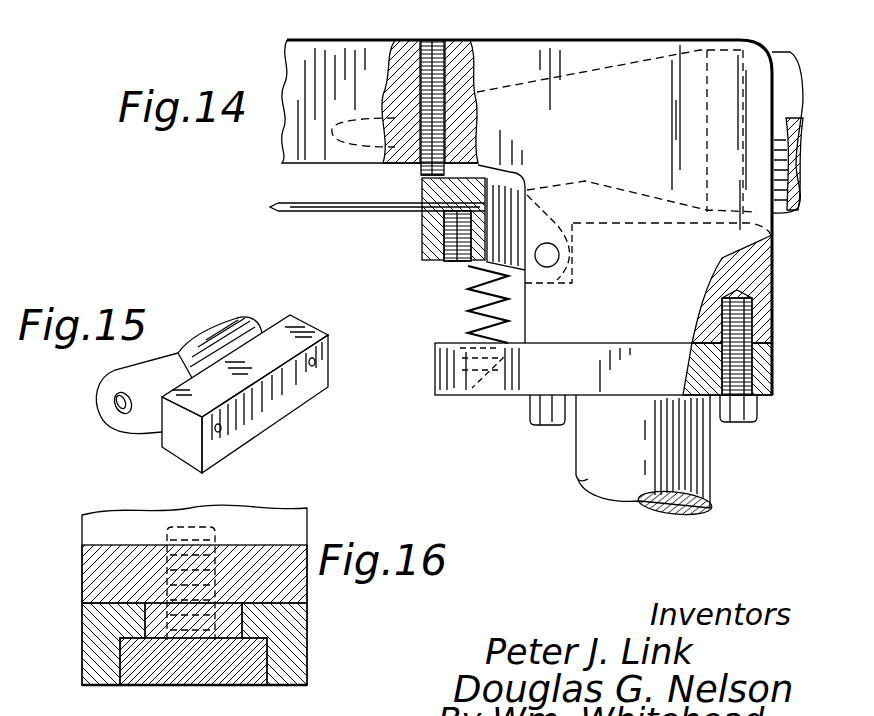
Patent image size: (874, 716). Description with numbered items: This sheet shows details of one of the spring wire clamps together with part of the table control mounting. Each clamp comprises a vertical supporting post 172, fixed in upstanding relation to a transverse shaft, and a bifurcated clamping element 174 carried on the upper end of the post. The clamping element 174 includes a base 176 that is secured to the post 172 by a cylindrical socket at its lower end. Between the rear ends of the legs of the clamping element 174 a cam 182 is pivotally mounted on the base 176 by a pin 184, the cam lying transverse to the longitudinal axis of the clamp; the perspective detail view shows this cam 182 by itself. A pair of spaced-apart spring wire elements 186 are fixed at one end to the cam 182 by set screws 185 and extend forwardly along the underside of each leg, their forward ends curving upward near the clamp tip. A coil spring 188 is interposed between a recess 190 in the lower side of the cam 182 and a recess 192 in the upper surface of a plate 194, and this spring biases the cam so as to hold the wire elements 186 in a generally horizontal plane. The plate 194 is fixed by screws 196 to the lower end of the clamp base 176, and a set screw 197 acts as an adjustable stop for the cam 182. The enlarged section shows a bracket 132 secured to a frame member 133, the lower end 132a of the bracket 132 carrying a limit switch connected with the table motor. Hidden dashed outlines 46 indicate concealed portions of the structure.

In FIG. 14, the bifurcated clamping element 174 is at (338, 46).
In FIG. 14, the set screw 197 is at (455, 19).
In FIG. 14, the hidden passage 46 is at (553, 80).
In FIG. 14, the recess 190 is at (527, 214).
In FIG. 14, the cam 182 is at (421, 236).
In FIG. 15, the cam 182 is at (268, 422).
In FIG. 14, the spring wire elements 186 is at (295, 212).
In FIG. 14, the set screws 185 is at (458, 264).
In FIG. 14, the coil spring 188 is at (462, 317).
In FIG. 14, the pin 184 is at (560, 257).
In FIG. 14, the recess 192 is at (515, 360).
In FIG. 14, the base 176 is at (600, 321).
In FIG. 14, the screws 196 is at (546, 427).
In FIG. 14, the plate 194 is at (462, 400).
In FIG. 14, the vertical supporting post 172 is at (578, 478).
In FIG. 16, the bracket 132 is at (307, 595).
In FIG. 16, the lower end of the bracket 132a is at (307, 516).
In FIG. 16, the frame member 133 is at (307, 650).